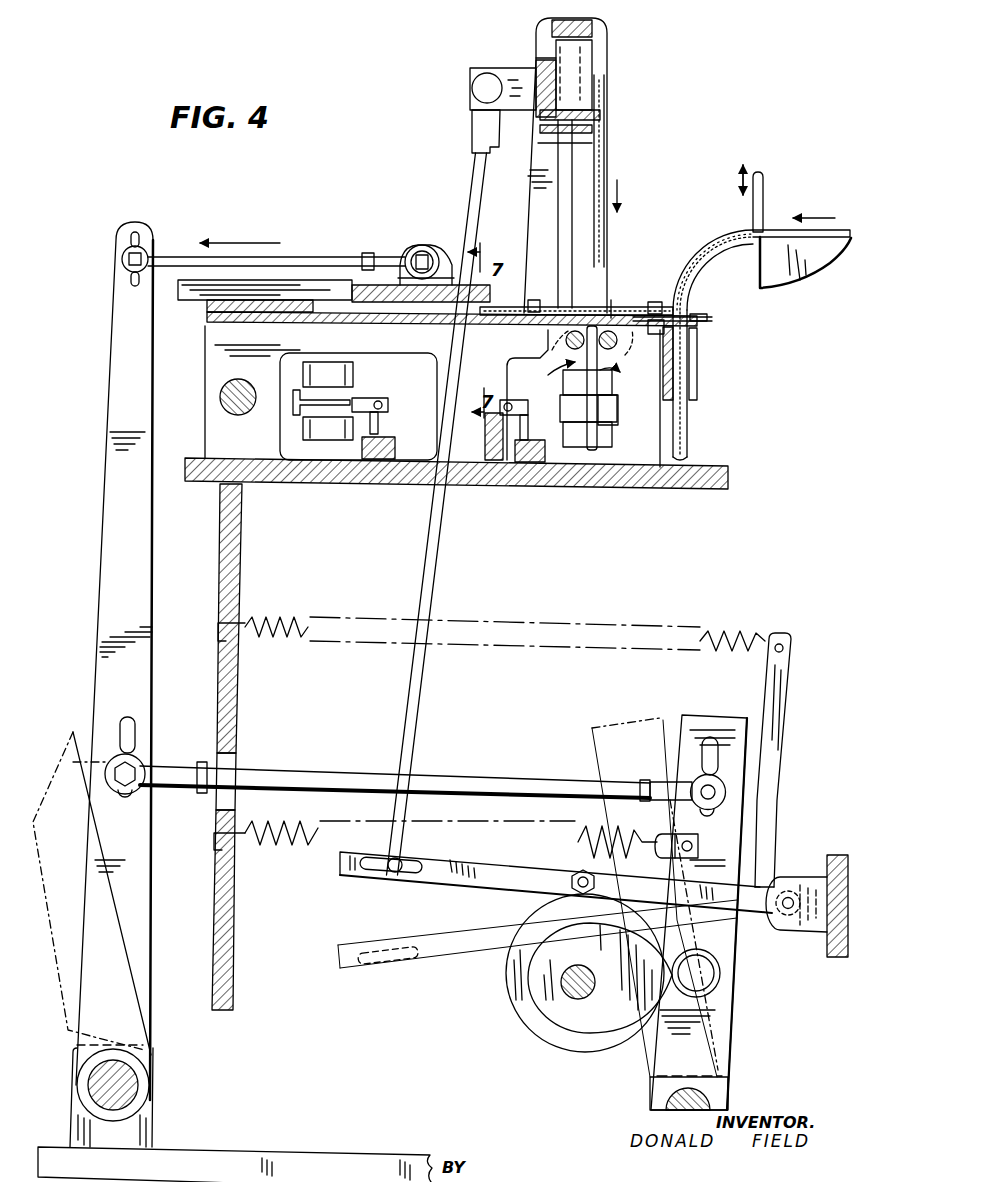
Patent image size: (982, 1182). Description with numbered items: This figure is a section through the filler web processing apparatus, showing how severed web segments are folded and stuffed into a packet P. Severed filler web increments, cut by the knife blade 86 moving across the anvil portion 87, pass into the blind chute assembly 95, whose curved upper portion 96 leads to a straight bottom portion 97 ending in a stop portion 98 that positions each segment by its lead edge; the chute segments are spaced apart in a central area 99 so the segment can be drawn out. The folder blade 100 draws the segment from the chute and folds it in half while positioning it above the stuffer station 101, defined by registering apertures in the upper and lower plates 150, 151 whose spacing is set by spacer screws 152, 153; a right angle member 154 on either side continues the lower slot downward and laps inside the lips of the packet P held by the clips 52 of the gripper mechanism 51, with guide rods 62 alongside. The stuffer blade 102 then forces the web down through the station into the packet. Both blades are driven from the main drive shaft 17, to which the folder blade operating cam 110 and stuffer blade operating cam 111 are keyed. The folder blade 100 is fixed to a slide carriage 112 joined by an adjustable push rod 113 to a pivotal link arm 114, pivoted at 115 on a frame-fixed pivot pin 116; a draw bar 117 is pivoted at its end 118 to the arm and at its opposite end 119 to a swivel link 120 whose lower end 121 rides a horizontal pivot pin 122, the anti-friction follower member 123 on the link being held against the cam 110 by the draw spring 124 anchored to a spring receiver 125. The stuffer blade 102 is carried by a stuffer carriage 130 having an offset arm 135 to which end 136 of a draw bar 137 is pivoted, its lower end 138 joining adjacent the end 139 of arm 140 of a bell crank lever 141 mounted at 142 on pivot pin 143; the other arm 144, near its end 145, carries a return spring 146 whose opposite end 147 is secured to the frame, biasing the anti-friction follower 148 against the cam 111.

The main drive shaft 17 is at (570, 985).
The gripper mechanism 51 is at (390, 426).
The packet holding clips 52 is at (292, 413).
The guide or clamp rods 62 is at (565, 340).
The knife blade 86 is at (753, 212).
The anvil portion 87 is at (752, 241).
The blind chute assembly 95 is at (716, 375).
The curved upper portion 96 is at (720, 244).
The straight bottom portion 97 is at (690, 436).
The stop portion 98 is at (689, 458).
The central area 99 is at (699, 309).
The folder blade 100 is at (714, 320).
The stuffer station 101 is at (582, 300).
The stuffer blade 102 is at (600, 240).
The folder blade operating cam 110 is at (566, 1030).
The stuffer blade operating cam 111 is at (512, 965).
The slide carriage 112 is at (413, 248).
The push rod 113 is at (318, 256).
The pivotal link arm 114 is at (108, 362).
The pivot 115 is at (156, 1065).
The pivot pin 116 is at (130, 1092).
The draw bar 117 is at (310, 774).
The end of draw bar 118 is at (166, 768).
The opposite end of draw bar 119 is at (663, 745).
The swivel link 120 is at (722, 716).
The lower end of swivel link 121 is at (733, 1093).
The horizontal pivot pin 122 is at (672, 1096).
The anti-friction follower member 123 is at (721, 972).
The draw spring 124 is at (305, 850).
The spring receiver 125 is at (660, 838).
The stuffer carriage 130 is at (612, 70).
The offset arm 135 is at (516, 74).
The end of draw bar 136 is at (477, 86).
The draw bar 137 is at (442, 548).
The lower end of draw bar 138 is at (390, 859).
The end of arm 139 is at (414, 878).
The arm of bell crank lever 140 is at (470, 885).
The bell crank lever 141 is at (779, 831).
The pivot 142 is at (789, 884).
The pivot pin 143 is at (827, 938).
The other arm of bell crank lever 144 is at (786, 712).
The end of arm 145 is at (792, 640).
The return spring 146 is at (298, 615).
The opposite end of spring 147 is at (224, 624).
The anti-friction follower 148 is at (578, 866).
The upper plate 150 is at (668, 306).
The lower plate 151 is at (625, 342).
The spacer screw 152 is at (534, 300).
The spacer screw 153 is at (660, 300).
The right angle member 154 is at (613, 312).
The packet P is at (618, 408).